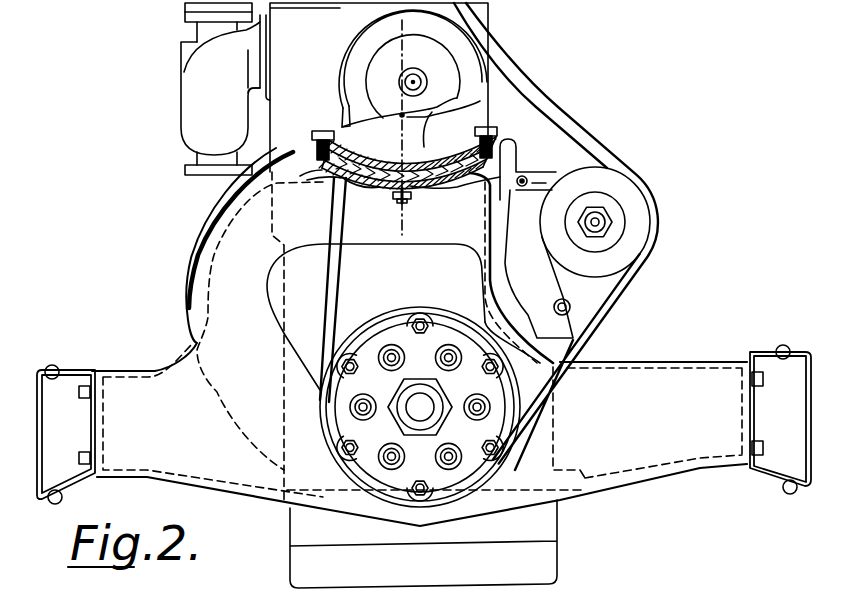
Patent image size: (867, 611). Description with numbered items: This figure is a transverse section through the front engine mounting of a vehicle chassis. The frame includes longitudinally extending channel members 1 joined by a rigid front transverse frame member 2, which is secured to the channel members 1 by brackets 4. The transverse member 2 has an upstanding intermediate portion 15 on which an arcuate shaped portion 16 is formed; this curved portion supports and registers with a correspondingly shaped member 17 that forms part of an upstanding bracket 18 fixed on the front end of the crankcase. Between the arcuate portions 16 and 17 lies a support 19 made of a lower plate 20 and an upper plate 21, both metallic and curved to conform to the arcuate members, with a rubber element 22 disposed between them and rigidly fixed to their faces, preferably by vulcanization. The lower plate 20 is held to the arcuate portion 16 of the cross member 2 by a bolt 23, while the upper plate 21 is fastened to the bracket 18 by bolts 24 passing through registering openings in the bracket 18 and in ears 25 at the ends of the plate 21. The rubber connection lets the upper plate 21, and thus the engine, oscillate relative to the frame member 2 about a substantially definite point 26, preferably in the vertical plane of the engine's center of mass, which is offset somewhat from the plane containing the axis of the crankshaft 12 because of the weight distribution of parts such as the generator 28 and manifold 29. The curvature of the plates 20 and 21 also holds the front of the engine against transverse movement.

The longitudinally extending channel member 1 is at (44, 441).
The transverse frame member 2 is at (185, 463).
The bracket 4 is at (77, 370).
The crankshaft 12 is at (420, 407).
The upstanding intermediate portion 15 is at (470, 253).
The arcuate shaped portion 16 is at (418, 192).
The correspondingly shaped member 17 is at (424, 147).
The upstanding bracket 18 is at (222, 207).
The support 19 is at (507, 160).
The lower plate 20 is at (285, 178).
The upper plate 21 is at (352, 142).
The rubber element 22 is at (345, 190).
The bolt 23 is at (408, 203).
The bolts 24 is at (318, 131).
The ears 25 is at (316, 145).
The point 26 is at (425, 100).
The generator 28 is at (640, 226).
The manifold 29 is at (197, 88).